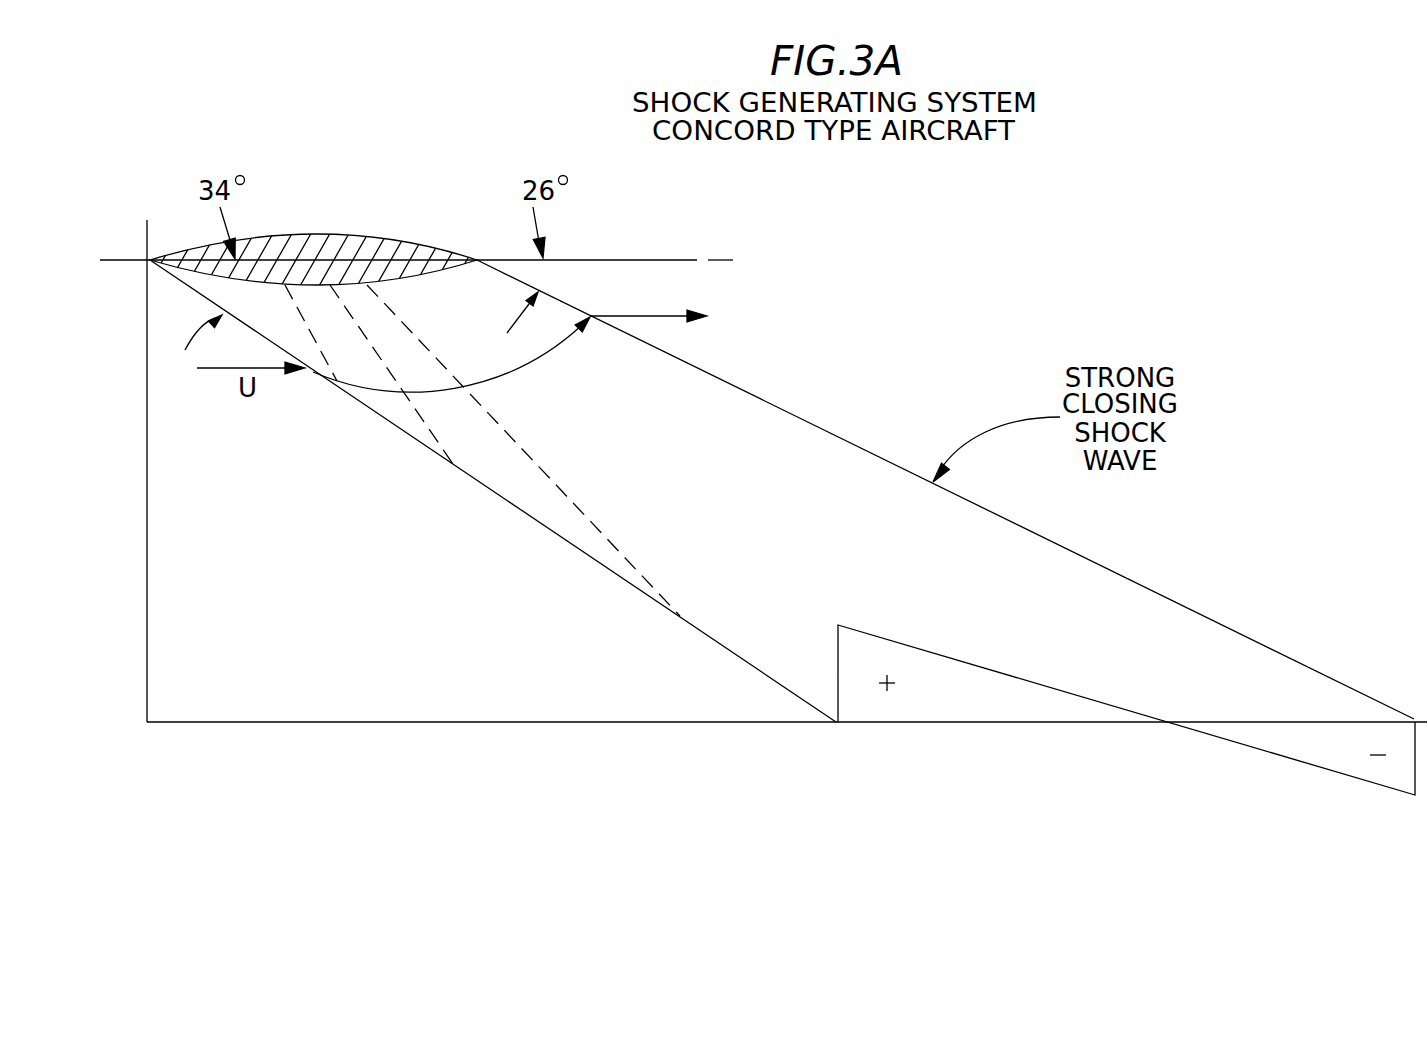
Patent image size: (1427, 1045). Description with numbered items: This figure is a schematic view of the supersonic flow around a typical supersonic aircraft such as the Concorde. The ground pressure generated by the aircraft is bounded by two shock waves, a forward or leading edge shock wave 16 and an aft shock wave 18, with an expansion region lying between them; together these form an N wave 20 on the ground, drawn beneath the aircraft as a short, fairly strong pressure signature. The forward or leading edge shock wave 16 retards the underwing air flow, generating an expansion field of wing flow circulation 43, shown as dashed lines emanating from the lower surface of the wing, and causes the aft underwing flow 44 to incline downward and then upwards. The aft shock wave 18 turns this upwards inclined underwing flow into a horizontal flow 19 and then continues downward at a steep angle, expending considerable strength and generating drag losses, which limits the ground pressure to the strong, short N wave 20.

The forward or leading edge shock wave 16 is at (513, 507).
The aft shock wave 18 is at (753, 393).
The horizontal flow 19 is at (632, 316).
The N wave 20 is at (975, 750).
The expansion field of wing flow circulation 43 is at (318, 352).
The aft underwing flow 44 is at (520, 368).